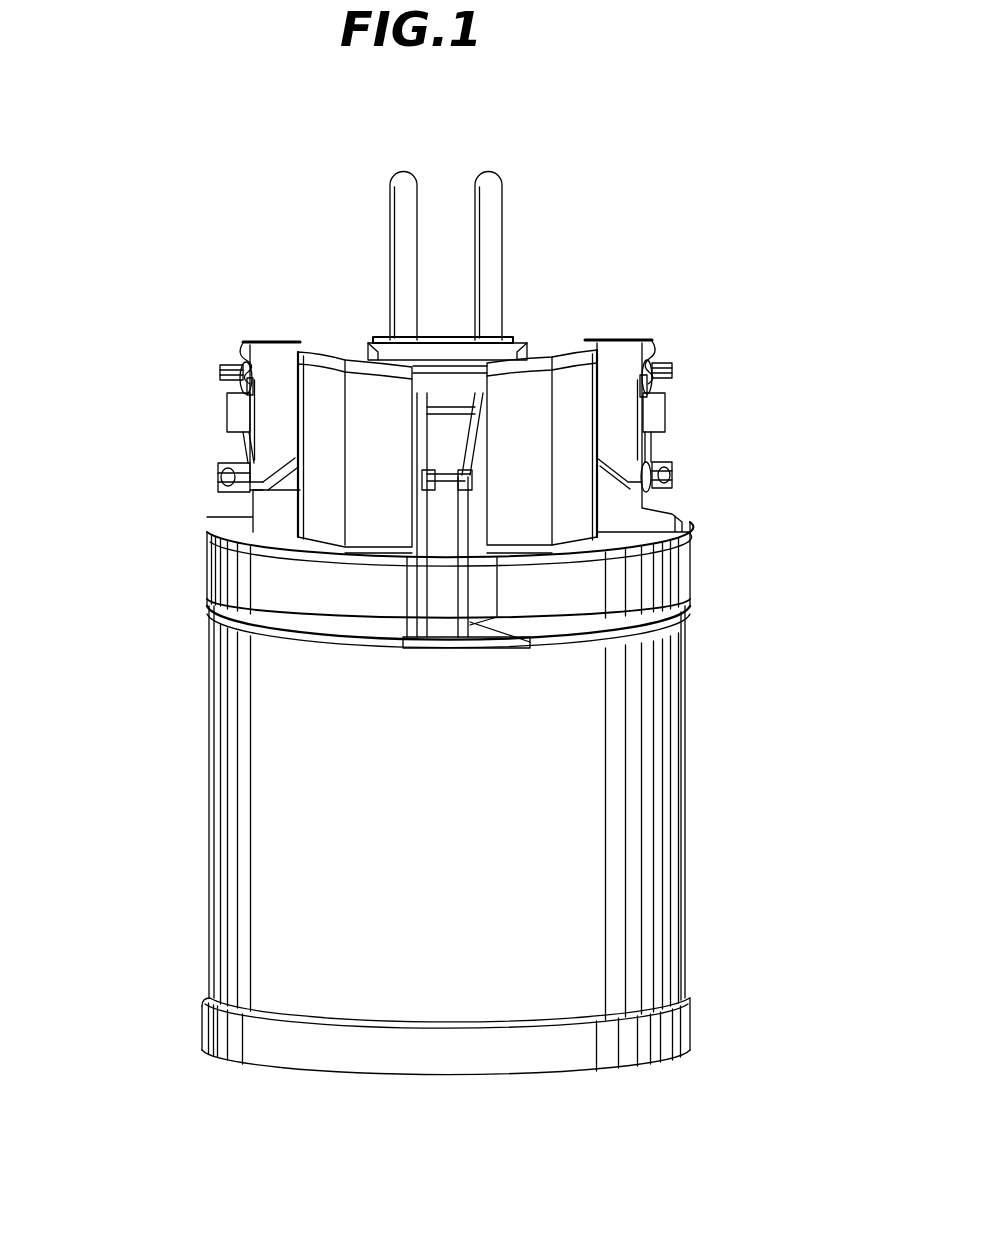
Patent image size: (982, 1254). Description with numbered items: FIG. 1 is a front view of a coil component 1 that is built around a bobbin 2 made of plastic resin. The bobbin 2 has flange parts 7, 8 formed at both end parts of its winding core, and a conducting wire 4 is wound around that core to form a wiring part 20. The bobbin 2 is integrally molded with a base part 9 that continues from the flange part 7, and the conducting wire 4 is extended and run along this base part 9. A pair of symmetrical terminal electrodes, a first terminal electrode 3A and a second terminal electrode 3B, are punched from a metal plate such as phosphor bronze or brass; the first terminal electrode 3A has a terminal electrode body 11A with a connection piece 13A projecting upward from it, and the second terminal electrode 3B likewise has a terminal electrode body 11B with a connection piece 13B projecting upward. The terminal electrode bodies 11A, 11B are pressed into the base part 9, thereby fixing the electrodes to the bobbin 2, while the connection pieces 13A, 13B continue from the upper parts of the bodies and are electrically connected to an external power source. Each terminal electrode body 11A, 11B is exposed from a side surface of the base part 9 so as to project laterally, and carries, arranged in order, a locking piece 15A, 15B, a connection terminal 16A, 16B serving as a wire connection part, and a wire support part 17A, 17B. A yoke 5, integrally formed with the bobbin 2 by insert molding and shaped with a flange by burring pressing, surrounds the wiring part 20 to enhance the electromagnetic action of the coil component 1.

The coil component 1 is at (205, 305).
The bobbin 2 is at (205, 665).
The first terminal electrode 3A is at (243, 341).
The second terminal electrode 3B is at (608, 334).
The conducting wire 4 is at (226, 470).
The yoke 5 is at (640, 578).
The flange part 7 is at (206, 628).
The flange part 8 is at (204, 1016).
The base part 9 is at (312, 500).
The terminal electrode body 11A is at (243, 350).
The terminal electrode body 11B is at (656, 345).
The connection piece 13A is at (402, 240).
The connection piece 13B is at (485, 240).
The locking piece 15A is at (255, 492).
The locking piece 15B is at (665, 478).
The connection terminal 16A is at (235, 412).
The connection terminal 16B is at (655, 413).
The wire support part 17A is at (222, 372).
The wire support part 17B is at (672, 374).
The wiring part 20 is at (218, 818).